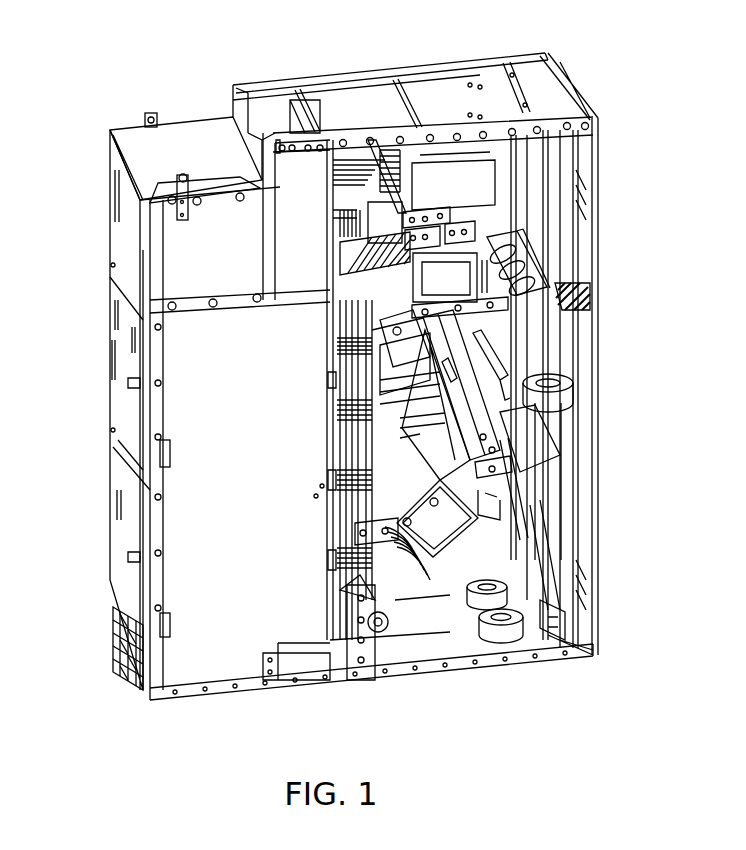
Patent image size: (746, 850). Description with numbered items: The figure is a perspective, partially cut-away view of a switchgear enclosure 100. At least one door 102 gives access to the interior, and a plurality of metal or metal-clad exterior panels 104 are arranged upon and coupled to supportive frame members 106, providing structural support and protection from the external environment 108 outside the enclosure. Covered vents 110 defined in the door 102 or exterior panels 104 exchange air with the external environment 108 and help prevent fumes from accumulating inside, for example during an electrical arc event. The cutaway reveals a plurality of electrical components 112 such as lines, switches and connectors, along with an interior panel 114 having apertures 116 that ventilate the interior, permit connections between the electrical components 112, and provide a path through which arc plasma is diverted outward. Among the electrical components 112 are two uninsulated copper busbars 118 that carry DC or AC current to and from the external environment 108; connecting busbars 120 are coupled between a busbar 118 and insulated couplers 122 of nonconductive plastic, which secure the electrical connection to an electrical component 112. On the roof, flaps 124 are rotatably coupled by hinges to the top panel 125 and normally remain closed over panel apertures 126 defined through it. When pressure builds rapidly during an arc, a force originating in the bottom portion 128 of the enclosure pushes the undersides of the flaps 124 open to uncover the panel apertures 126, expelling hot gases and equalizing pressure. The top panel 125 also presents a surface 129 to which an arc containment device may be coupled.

The switchgear enclosure 100 is at (95, 48).
The door 102 is at (130, 405).
The exterior panels 104 is at (178, 160).
The supportive frame members 106 is at (596, 135).
The external environment 108 is at (248, 67).
The covered vents 110 is at (118, 640).
The electrical components 112 is at (562, 610).
The interior panel 114 is at (575, 282).
The apertures 116 is at (540, 250).
The busbar 118 is at (548, 335).
The connecting busbar 120 is at (333, 292).
The insulated coupler 122 is at (333, 380).
The flap 124 is at (348, 112).
The top panel 125 is at (496, 82).
The panel apertures 126 is at (405, 155).
The bottom portion 128 is at (432, 686).
The surface 129 is at (503, 78).